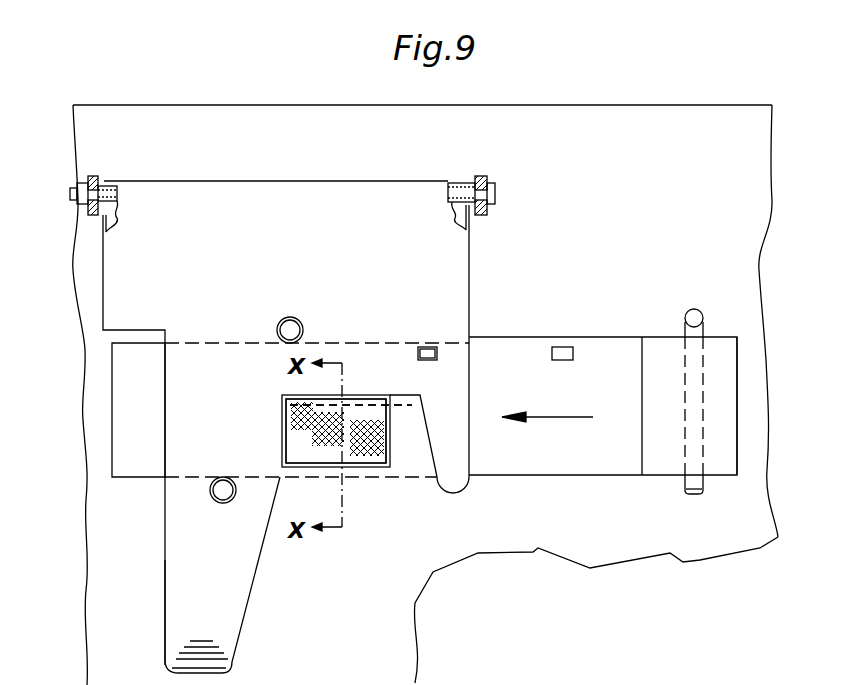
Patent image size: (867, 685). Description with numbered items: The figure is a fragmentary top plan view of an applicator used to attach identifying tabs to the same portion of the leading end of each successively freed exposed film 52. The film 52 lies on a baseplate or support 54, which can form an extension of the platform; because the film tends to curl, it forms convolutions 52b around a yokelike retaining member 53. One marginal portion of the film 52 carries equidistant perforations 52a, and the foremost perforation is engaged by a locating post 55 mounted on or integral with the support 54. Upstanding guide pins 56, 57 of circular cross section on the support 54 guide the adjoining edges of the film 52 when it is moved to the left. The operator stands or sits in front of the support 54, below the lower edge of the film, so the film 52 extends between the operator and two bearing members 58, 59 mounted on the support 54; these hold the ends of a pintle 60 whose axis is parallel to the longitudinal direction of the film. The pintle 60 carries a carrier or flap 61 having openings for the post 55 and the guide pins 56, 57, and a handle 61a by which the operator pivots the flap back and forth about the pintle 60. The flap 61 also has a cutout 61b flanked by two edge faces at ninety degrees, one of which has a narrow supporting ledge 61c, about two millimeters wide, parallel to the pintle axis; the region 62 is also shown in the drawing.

The exposed film 52 is at (624, 460).
The perforations 52a is at (433, 362).
The convolutions 52b is at (730, 458).
The yokelike retaining member 53 is at (687, 312).
The baseplate or support 54 is at (712, 122).
The locating post 55 is at (426, 347).
The guide pin 56 is at (290, 317).
The guide pin 57 is at (218, 500).
The bearing member 58 is at (487, 178).
The bearing member 59 is at (95, 175).
The pintle 60 is at (495, 196).
The carrier or flap 61 is at (107, 334).
The handle 61a is at (172, 588).
The cutout 61b is at (283, 433).
The supporting ledge 61c is at (362, 400).
The pad 62 is at (380, 460).